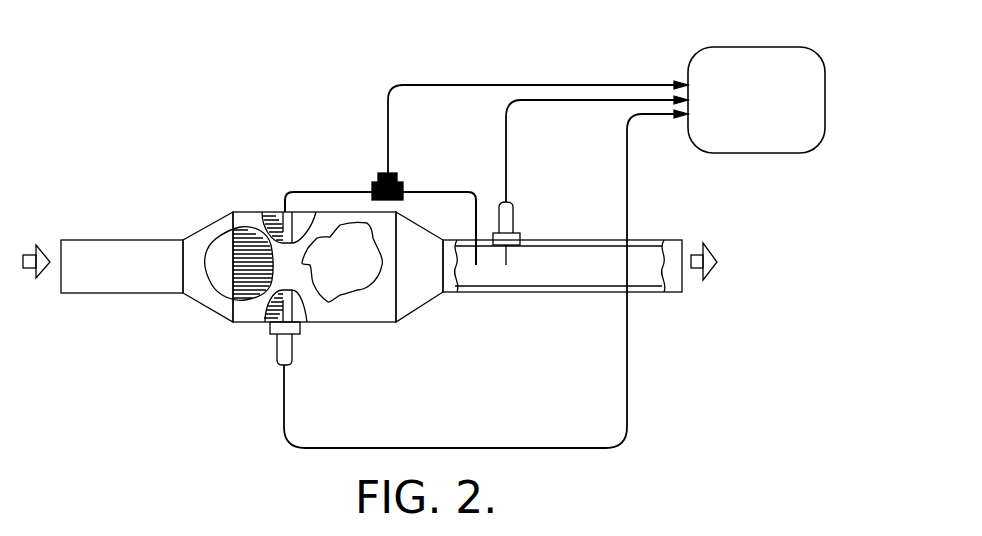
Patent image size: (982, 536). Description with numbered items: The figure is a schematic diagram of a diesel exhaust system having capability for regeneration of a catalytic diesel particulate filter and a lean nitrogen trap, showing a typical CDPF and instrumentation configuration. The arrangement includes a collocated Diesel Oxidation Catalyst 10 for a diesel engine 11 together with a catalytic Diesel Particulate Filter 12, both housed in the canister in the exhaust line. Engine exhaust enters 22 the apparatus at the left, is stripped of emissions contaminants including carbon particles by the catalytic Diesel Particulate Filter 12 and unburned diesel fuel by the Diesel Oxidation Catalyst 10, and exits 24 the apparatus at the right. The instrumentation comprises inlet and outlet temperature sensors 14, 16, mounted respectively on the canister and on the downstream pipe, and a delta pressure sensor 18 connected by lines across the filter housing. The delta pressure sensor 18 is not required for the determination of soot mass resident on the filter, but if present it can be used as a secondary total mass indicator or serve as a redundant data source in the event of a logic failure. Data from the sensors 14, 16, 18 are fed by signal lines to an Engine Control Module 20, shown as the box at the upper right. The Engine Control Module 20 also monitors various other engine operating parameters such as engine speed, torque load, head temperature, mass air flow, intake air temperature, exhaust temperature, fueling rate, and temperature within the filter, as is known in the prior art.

The diesel oxidation catalyst 10 is at (245, 238).
The diesel engine 11 is at (168, 210).
The catalytic diesel particulate filter 12 is at (340, 258).
The inlet temperature sensor 14 is at (277, 345).
The outlet temperature sensor 16 is at (517, 215).
The delta pressure sensor 18 is at (392, 172).
The engine control module 20 is at (702, 65).
The exhaust entry 22 is at (30, 250).
The exhaust exit 24 is at (697, 252).